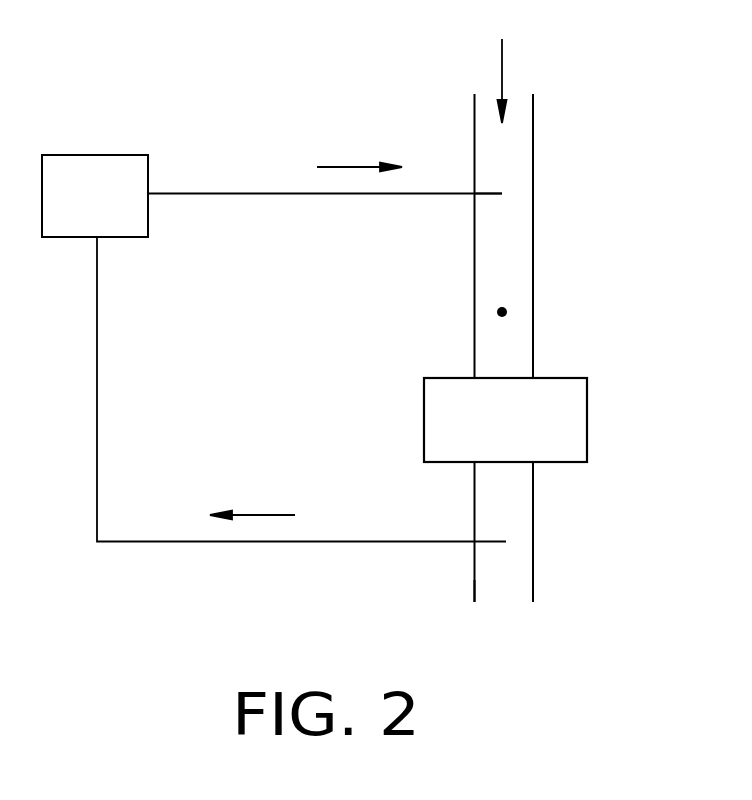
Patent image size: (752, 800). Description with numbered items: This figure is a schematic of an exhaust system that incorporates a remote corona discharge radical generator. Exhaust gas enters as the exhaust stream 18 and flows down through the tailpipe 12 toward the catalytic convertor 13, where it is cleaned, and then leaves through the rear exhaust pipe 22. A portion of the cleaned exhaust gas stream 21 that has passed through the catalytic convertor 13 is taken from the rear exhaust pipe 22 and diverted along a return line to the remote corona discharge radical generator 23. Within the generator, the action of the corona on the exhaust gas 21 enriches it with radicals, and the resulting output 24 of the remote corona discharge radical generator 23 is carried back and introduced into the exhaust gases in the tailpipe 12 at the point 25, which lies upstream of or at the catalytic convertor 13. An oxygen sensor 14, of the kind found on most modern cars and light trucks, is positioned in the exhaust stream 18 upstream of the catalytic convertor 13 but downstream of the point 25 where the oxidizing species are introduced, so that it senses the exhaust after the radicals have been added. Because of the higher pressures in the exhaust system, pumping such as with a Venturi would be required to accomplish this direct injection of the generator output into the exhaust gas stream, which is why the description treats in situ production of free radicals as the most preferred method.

The tailpipe 12 is at (533, 157).
The catalytic convertor 13 is at (520, 436).
The oxygen sensor 14 is at (506, 311).
The exhaust stream 18 is at (501, 60).
The cleaned exhaust gas stream 21 is at (307, 542).
The rear exhaust pipe 22 is at (535, 587).
The remote corona discharge radical generator 23 is at (110, 213).
The output of the remote corona discharge radical generator 24 is at (235, 193).
The point where the oxidizing species are introduced 25 is at (492, 195).